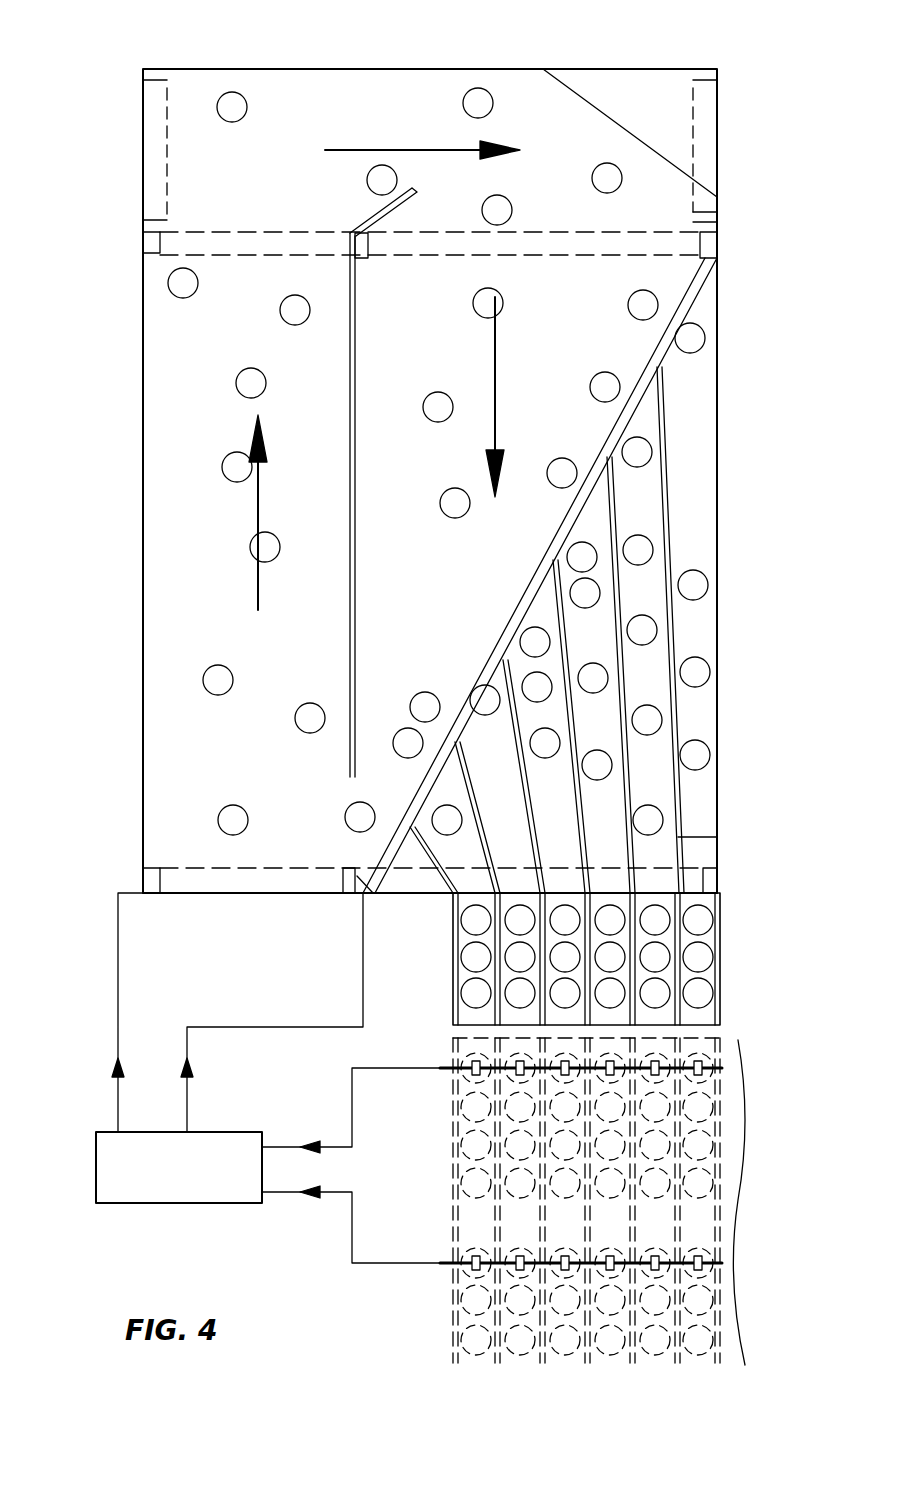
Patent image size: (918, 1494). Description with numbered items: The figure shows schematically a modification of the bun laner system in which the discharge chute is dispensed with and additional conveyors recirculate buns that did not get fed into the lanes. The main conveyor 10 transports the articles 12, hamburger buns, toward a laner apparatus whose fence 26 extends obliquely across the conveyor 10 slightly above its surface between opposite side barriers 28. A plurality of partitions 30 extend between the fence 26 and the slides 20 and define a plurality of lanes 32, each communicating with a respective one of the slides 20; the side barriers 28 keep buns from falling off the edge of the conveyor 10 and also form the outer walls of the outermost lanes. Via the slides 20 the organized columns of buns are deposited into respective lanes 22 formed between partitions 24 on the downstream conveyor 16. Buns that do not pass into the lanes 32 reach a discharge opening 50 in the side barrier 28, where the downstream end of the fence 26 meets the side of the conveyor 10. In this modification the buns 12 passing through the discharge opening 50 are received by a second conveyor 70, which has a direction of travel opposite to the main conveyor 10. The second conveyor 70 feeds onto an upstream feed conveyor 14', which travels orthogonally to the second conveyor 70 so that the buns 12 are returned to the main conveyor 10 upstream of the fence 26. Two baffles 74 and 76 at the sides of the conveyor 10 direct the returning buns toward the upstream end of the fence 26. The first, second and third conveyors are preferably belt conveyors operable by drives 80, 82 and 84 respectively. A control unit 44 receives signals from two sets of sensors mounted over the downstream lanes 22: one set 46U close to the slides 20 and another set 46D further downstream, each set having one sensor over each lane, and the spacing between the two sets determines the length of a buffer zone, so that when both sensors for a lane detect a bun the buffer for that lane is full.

The conveyor 10 is at (573, 310).
The articles 12 is at (698, 673).
The upstream feed conveyor 14' is at (677, 133).
The downstream conveyor 16 is at (598, 1200).
The slides 20 is at (732, 952).
The lanes 22 is at (703, 1220).
The partitions 24 is at (718, 1308).
The fence 26 is at (647, 388).
The side barriers 28 is at (355, 603).
The partitions 30 is at (637, 880).
The lanes 32 is at (470, 850).
The control unit 44 is at (195, 1203).
The upstream set of sensors 46U is at (697, 1067).
The downstream set of sensors 46D is at (522, 1262).
The discharge opening 50 is at (353, 852).
The second conveyor 70 is at (178, 348).
The baffle 74 is at (353, 217).
The baffle 76 is at (650, 150).
The drive 80 is at (618, 238).
The drive 82 is at (230, 245).
The drive 84 is at (705, 88).